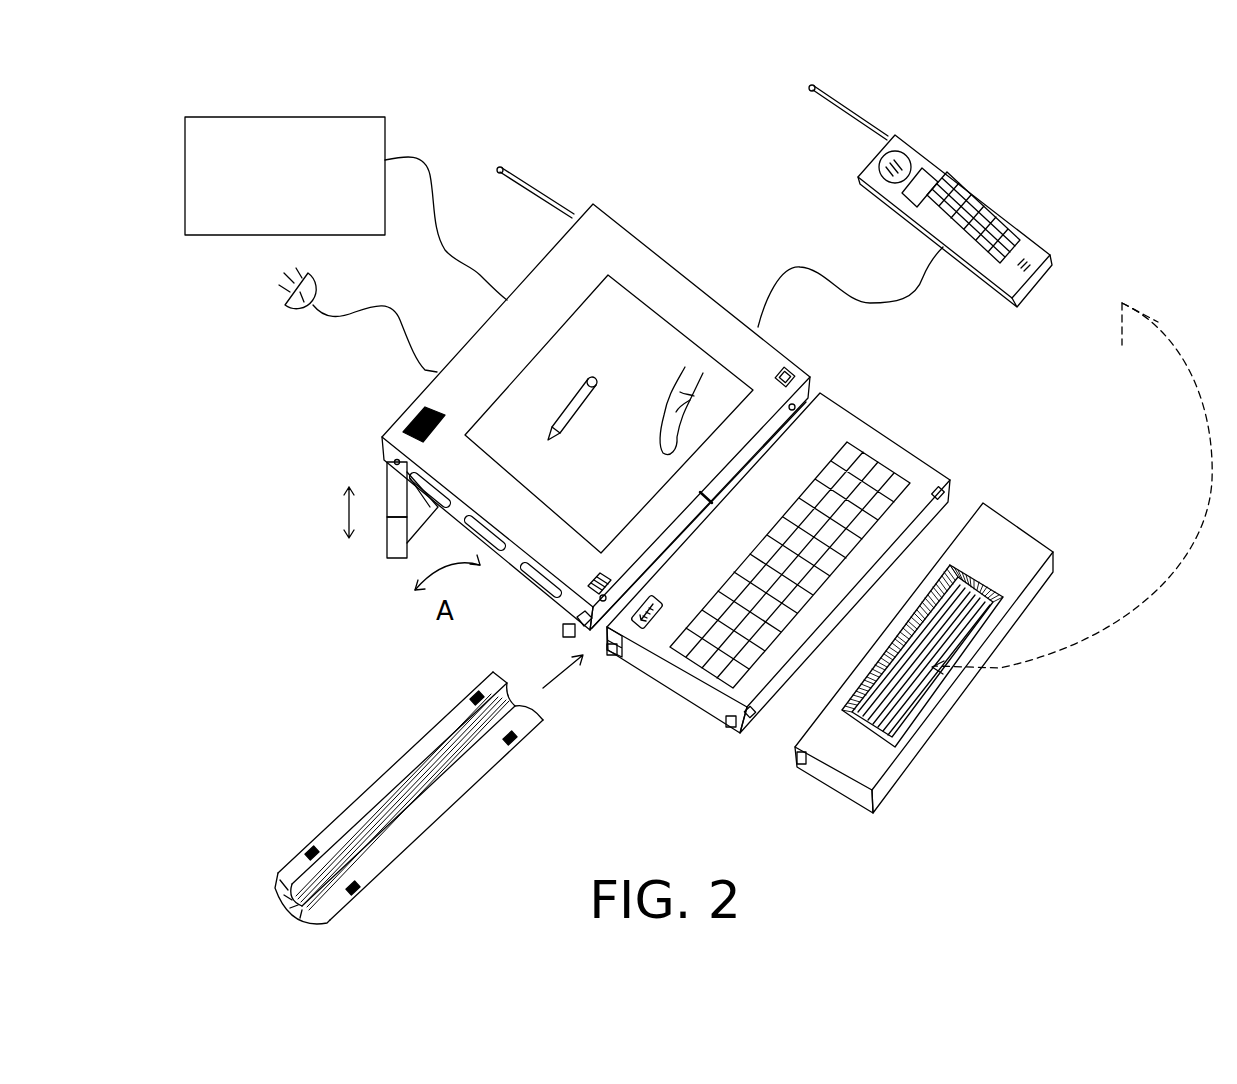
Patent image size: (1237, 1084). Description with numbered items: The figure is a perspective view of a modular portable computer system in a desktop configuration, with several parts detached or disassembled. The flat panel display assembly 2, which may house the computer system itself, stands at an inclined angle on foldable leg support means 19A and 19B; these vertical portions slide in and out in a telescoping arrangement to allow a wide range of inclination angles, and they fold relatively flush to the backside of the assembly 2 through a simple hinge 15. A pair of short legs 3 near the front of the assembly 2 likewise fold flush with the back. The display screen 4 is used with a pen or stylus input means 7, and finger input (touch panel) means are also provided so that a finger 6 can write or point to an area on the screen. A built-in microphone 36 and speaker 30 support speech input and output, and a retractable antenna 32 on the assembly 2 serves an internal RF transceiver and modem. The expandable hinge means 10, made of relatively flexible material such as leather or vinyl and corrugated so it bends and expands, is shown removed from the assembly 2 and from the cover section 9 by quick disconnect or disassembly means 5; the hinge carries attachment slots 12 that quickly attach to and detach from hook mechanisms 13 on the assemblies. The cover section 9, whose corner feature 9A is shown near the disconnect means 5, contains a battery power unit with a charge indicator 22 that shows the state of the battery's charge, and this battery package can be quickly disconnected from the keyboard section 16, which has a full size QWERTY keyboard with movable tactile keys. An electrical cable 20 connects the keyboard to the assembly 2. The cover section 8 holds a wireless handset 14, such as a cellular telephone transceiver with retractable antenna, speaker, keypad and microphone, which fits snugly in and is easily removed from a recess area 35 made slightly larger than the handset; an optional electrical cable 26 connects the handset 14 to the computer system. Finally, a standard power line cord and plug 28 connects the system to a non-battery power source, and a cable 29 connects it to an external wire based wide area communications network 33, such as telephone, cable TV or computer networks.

The flat panel display assembly 2 is at (643, 237).
The short legs 3 is at (560, 630).
The display screen 4 is at (663, 340).
The quick disconnect or disassembly means 5 is at (565, 622).
The finger 6 is at (668, 420).
The pen and/or finger input means 7 is at (572, 407).
The cover section 8 is at (1003, 540).
The cover section 9 is at (838, 412).
The keyboard latch housing 9A is at (615, 655).
The expandable hinge means 10 is at (380, 770).
The attachment slots 12 is at (473, 682).
The hook mechanisms 13 is at (795, 403).
The wireless handset 14 is at (1030, 247).
The hinge 15 is at (386, 462).
The keyboard section 16 is at (895, 457).
The foldable leg support means 19A is at (390, 485).
The foldable leg support means 19B is at (393, 560).
The electrical cable 20 is at (708, 500).
The charge indicator 22 is at (658, 608).
The electrical cable 26 is at (908, 304).
The power line cord and plug 28 is at (303, 307).
The cable 29 is at (466, 262).
The speaker 30 is at (398, 428).
The retractable antenna 32 is at (516, 180).
The wire based wide area communications network 33 is at (340, 124).
The recess area 35 is at (912, 704).
The built-in microphone 36 is at (594, 578).